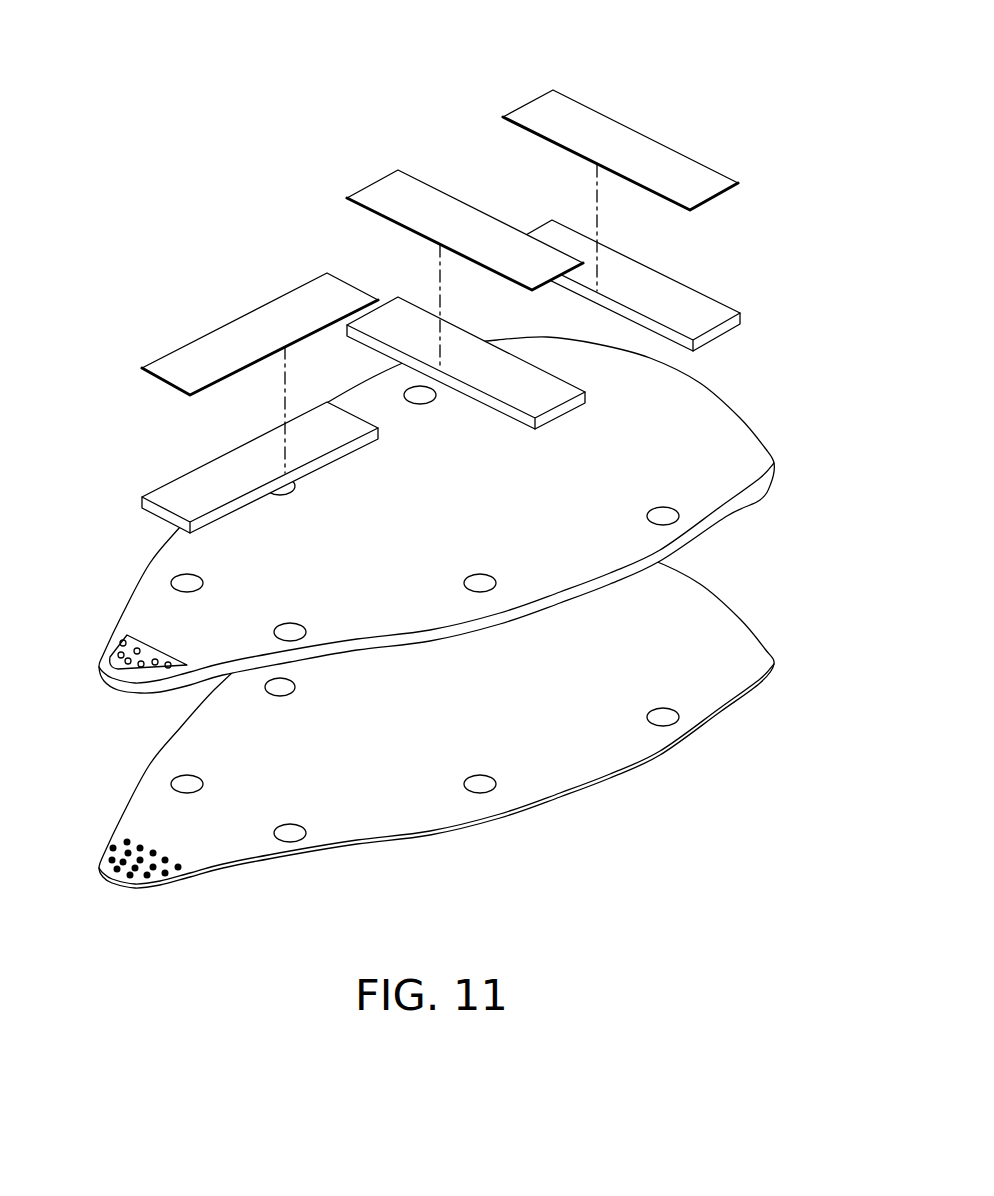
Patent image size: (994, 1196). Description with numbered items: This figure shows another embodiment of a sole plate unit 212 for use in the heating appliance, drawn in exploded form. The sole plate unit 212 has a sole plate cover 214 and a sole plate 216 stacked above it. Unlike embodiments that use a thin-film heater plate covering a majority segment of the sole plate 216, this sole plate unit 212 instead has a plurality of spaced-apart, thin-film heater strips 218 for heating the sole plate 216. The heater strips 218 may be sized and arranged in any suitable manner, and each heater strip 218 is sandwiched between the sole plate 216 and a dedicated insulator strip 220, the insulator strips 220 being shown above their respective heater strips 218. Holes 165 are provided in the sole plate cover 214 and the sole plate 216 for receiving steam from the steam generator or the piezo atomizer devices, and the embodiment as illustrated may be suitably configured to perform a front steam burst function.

The sole plate unit 212 is at (197, 68).
The sole plate cover 214 is at (762, 626).
The sole plate 216 is at (752, 411).
The thin-film heater strip 218 is at (152, 491).
The insulator strip 220 is at (208, 332).
The holes 165 is at (170, 583).